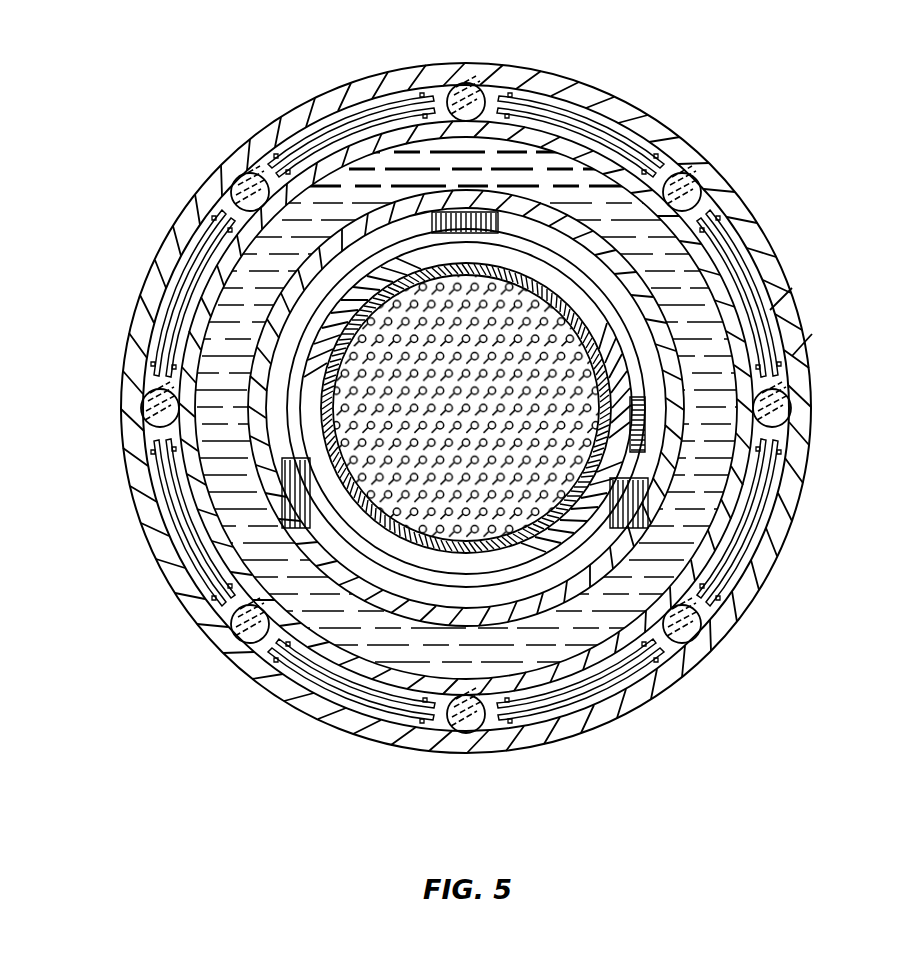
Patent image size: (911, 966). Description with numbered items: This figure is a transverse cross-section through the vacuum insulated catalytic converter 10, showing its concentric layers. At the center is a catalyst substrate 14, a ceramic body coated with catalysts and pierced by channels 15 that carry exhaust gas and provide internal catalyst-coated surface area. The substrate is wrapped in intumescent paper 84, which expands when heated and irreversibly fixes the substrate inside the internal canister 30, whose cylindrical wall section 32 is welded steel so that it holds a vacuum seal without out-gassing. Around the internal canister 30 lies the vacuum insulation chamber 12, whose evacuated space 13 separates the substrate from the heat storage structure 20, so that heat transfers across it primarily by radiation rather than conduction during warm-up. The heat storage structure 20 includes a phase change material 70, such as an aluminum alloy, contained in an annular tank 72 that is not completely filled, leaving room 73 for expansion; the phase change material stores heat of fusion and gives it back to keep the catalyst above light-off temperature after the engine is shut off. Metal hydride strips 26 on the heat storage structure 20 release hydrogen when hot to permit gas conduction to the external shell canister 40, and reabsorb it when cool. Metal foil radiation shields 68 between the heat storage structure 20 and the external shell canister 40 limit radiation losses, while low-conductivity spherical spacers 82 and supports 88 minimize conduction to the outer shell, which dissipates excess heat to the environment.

The vacuum insulated catalytic converter 10 is at (281, 86).
The vacuum insulation chamber 12 is at (213, 193).
The evacuated space 13 is at (615, 296).
The catalyst substrate 14 is at (318, 356).
The channels 15 is at (343, 443).
The heat storage structure 20 is at (205, 265).
The metal hydride strips 26 is at (779, 298).
The internal canister 30 is at (305, 332).
The cylindrical wall section 32 is at (560, 300).
The external shell canister 40 is at (125, 292).
The metal foil radiation shields 68 is at (552, 712).
The phase change material 70 is at (556, 157).
The annular tank 72 is at (803, 345).
The room 73 is at (458, 144).
The spherical spacers 82 is at (223, 613).
The intumescent paper 84 is at (535, 548).
The support 88 is at (562, 222).